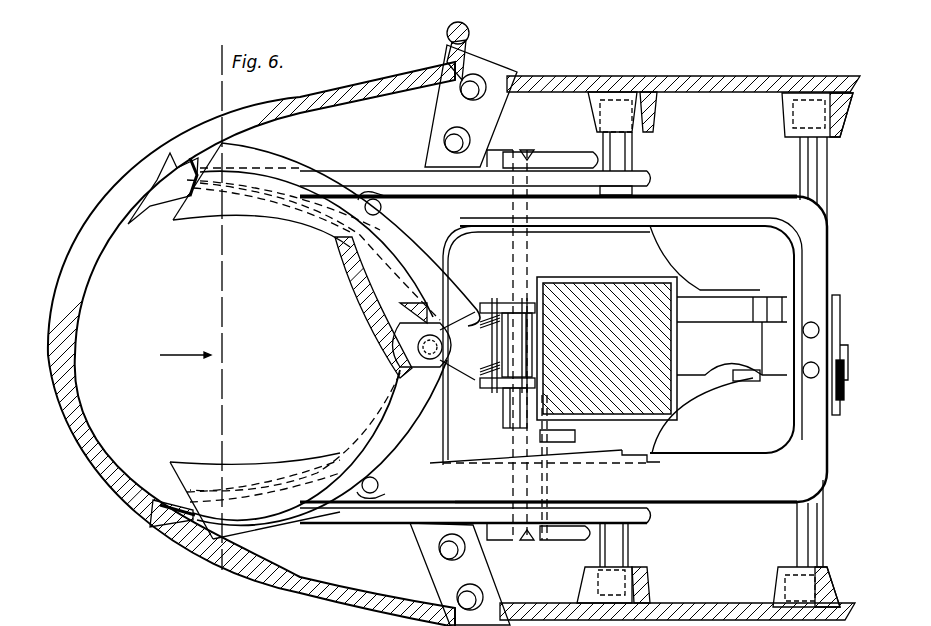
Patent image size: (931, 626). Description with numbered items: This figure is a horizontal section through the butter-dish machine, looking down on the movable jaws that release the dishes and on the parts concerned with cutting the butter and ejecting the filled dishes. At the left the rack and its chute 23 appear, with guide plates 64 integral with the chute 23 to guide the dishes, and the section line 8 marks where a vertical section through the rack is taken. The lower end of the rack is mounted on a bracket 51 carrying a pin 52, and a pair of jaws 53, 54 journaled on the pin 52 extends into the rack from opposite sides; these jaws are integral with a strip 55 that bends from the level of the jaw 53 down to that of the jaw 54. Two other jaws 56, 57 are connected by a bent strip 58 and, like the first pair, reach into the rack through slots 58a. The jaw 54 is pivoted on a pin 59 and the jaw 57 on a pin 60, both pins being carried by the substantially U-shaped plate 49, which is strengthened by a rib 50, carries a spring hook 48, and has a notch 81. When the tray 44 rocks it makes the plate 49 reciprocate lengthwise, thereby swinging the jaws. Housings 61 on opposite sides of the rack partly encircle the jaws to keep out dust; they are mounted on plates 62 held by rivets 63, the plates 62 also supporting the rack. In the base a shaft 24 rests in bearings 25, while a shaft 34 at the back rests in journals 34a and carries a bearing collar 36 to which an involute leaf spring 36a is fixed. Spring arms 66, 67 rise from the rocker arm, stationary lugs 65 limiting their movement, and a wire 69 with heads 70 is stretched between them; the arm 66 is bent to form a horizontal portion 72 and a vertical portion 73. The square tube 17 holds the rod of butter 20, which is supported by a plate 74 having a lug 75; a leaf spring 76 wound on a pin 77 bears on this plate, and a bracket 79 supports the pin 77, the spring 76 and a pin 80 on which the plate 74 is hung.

The section line 8 is at (220, 315).
The square tube 17 is at (672, 281).
The butter 20 is at (645, 311).
The chute 23 is at (345, 112).
The shaft 24 is at (636, 150).
The bearings 25 is at (588, 110).
The shaft 34 is at (828, 174).
The journals 34a is at (790, 123).
The bearing collar 36 is at (836, 296).
The leaf spring 36a is at (848, 383).
The tray 44 is at (680, 439).
The spring hook 48 is at (732, 351).
The plate 49 is at (707, 488).
The rib 50 is at (663, 199).
The bracket 51 is at (398, 361).
The pin 52 is at (400, 346).
The jaw 53 is at (248, 208).
The jaw 54 is at (260, 530).
The strip 55 is at (392, 306).
The jaw 56 is at (233, 472).
The jaw 57 is at (248, 157).
The strip 58 is at (335, 334).
The slots 58a is at (178, 186).
The pin 59 is at (380, 486).
The pin 60 is at (382, 206).
The housings 61 is at (392, 82).
The plates 62 is at (458, 108).
The rivets 63 is at (484, 80).
The guide plates 64 is at (384, 170).
The stationary lugs 65 is at (498, 150).
The spring arm 66 is at (578, 541).
The spring arm 67 is at (567, 152).
The wire 69 is at (527, 245).
The heads 70 is at (528, 150).
The horizontal portion 72 is at (560, 449).
The vertical portion 73 is at (570, 433).
The plate 74 is at (520, 347).
The lug 75 is at (508, 433).
The leaf spring 76 is at (533, 322).
The pin 77 is at (490, 300).
The bracket 79 is at (511, 300).
The pin 80 is at (520, 391).
The notch 81 is at (667, 460).